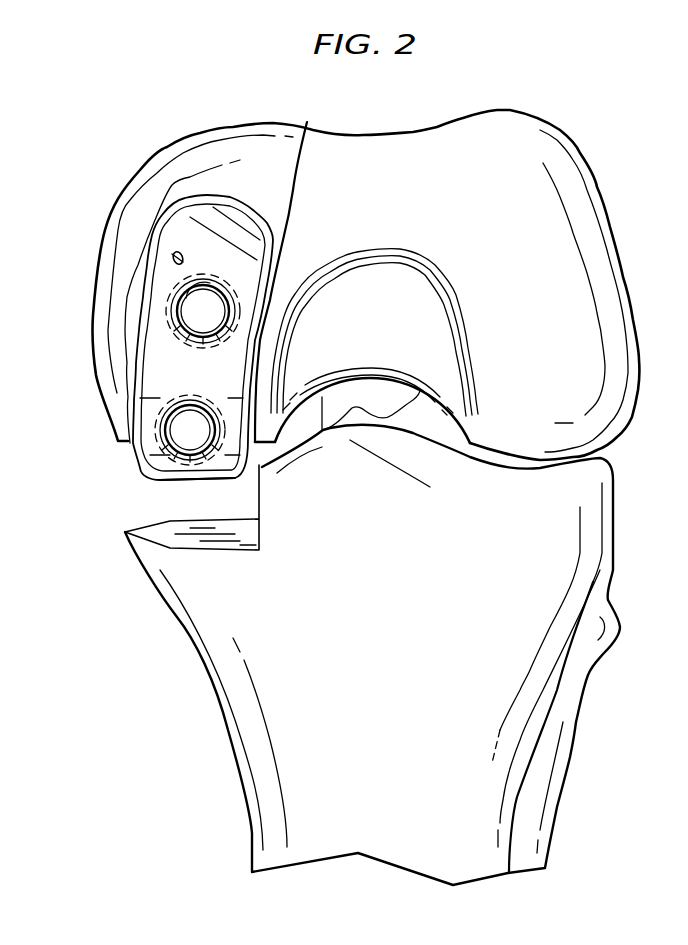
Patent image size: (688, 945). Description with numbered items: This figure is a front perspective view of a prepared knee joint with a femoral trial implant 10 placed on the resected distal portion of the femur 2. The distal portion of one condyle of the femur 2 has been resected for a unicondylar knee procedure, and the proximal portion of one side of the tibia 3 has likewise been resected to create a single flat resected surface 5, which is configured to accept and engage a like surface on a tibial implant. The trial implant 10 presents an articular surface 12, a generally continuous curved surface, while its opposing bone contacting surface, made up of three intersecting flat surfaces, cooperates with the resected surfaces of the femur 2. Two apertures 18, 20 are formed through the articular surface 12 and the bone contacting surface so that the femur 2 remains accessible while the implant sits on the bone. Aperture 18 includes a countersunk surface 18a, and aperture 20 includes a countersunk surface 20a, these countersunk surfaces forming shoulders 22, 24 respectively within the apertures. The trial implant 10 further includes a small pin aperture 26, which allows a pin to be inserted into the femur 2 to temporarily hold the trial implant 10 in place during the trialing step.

The femur 2 is at (423, 183).
The tibia 3 is at (293, 722).
The resected surface 5 is at (160, 528).
The femoral trial implant 10 is at (116, 291).
The articular surface 12 is at (167, 380).
The aperture 18 is at (192, 302).
The countersunk surface 18a is at (192, 335).
The aperture 20 is at (180, 422).
The countersunk surface 20a is at (170, 445).
The shoulder 22 is at (307, 122).
The shoulder 24 is at (183, 479).
The pin aperture 26 is at (174, 255).